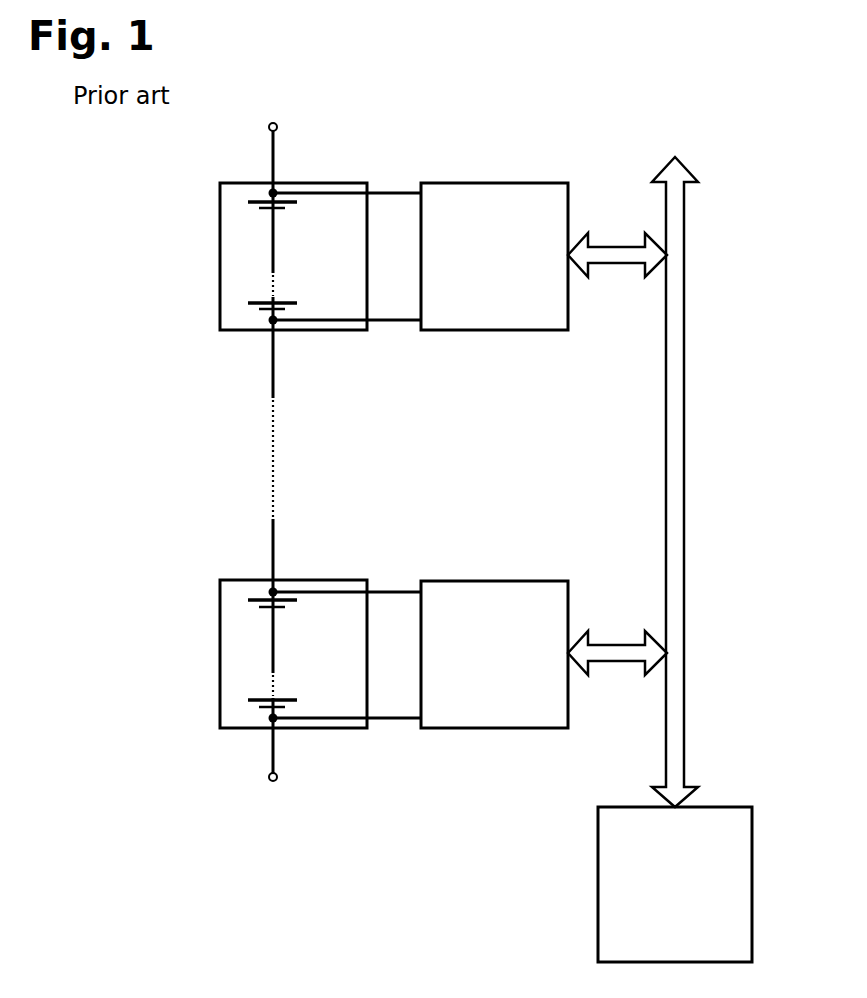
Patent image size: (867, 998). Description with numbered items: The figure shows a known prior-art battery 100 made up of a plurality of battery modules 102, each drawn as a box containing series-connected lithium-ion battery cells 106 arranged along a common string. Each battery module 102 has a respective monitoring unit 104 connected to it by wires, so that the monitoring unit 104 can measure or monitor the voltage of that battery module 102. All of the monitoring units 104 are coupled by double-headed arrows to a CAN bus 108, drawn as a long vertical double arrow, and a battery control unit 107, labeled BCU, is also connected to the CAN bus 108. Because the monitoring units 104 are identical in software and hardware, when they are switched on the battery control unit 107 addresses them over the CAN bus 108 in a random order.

The battery 100 is at (384, 840).
The battery module 102 is at (342, 183).
The monitoring unit 104 is at (474, 183).
The lithium-ion battery cell 106 is at (266, 608).
The battery control unit 107 is at (598, 885).
The CAN bus 108 is at (674, 555).